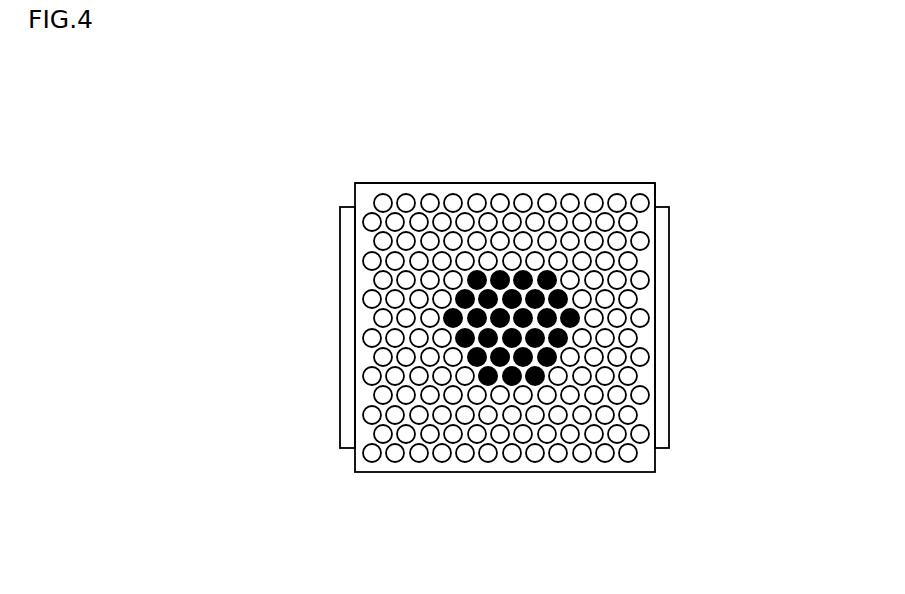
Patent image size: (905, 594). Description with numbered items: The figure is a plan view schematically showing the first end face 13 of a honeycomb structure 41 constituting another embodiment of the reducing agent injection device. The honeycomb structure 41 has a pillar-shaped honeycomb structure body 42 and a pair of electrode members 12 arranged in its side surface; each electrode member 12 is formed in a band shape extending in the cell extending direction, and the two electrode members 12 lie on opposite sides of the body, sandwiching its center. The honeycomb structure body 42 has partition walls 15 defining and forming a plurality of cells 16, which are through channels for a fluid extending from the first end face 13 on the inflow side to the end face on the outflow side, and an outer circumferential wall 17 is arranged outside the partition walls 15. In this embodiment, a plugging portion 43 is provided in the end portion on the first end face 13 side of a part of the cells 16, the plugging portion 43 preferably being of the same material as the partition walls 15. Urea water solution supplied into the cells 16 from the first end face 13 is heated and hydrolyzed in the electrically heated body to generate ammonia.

The honeycomb structure 41 is at (857, 72).
The honeycomb structure body 42 is at (668, 190).
The plugging portion 43 is at (489, 386).
The electrode member 12 is at (682, 315).
The first end face 13 is at (545, 465).
The partition wall 15 is at (566, 202).
The cell 16 is at (402, 198).
The outer circumferential wall 17 is at (494, 183).